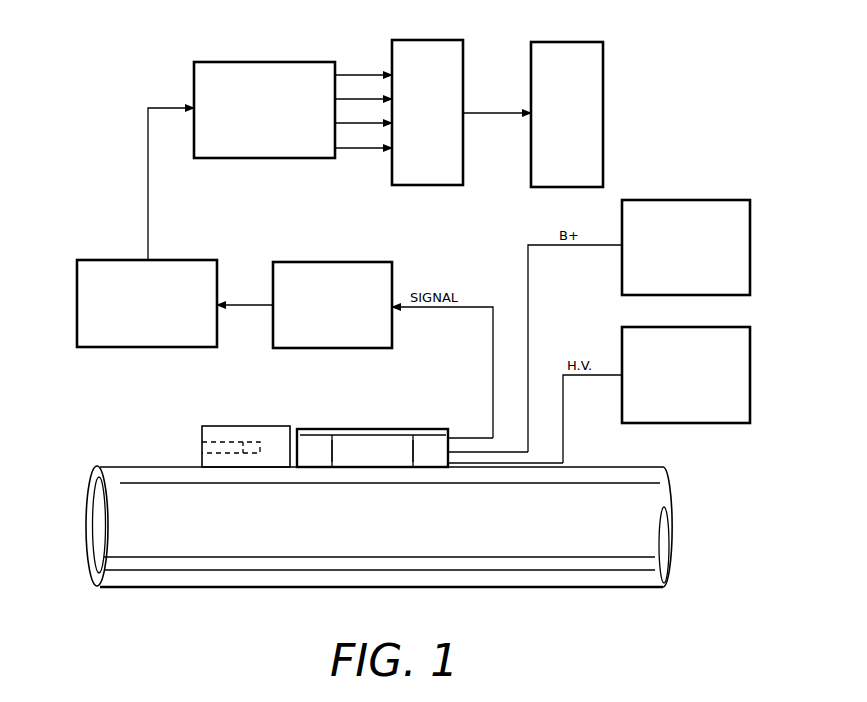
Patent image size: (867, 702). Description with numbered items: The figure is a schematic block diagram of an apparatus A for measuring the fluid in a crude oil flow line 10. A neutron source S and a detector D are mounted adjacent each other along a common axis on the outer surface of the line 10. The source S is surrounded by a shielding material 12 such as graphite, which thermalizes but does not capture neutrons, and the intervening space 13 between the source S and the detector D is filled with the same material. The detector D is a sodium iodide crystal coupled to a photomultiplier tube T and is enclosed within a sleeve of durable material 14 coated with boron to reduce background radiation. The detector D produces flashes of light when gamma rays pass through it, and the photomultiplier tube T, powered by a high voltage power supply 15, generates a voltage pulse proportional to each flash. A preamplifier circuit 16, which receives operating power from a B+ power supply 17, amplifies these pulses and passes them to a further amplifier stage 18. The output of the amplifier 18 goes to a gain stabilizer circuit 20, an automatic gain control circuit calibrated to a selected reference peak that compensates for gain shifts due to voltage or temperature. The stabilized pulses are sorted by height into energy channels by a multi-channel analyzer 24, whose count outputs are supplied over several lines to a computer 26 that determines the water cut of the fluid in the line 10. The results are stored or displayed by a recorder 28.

The crude oil flow line 10 is at (635, 590).
The shielding material 12 is at (270, 428).
The intervening space 13 is at (300, 435).
The sleeve of durable material 14 is at (408, 430).
The high voltage power supply 15 is at (750, 338).
The preamplifier circuit 16 is at (435, 442).
The B+ power supply 17 is at (707, 200).
The amplifier stage 18 is at (360, 262).
The gain stabilizer circuit 20 is at (176, 260).
The multi-channel analyzer 24 is at (262, 62).
The computer 26 is at (463, 46).
The recorder 28 is at (603, 52).
The neutron source S is at (248, 440).
The detector D is at (320, 440).
The photomultiplier tube T is at (375, 440).
The apparatus A is at (92, 405).